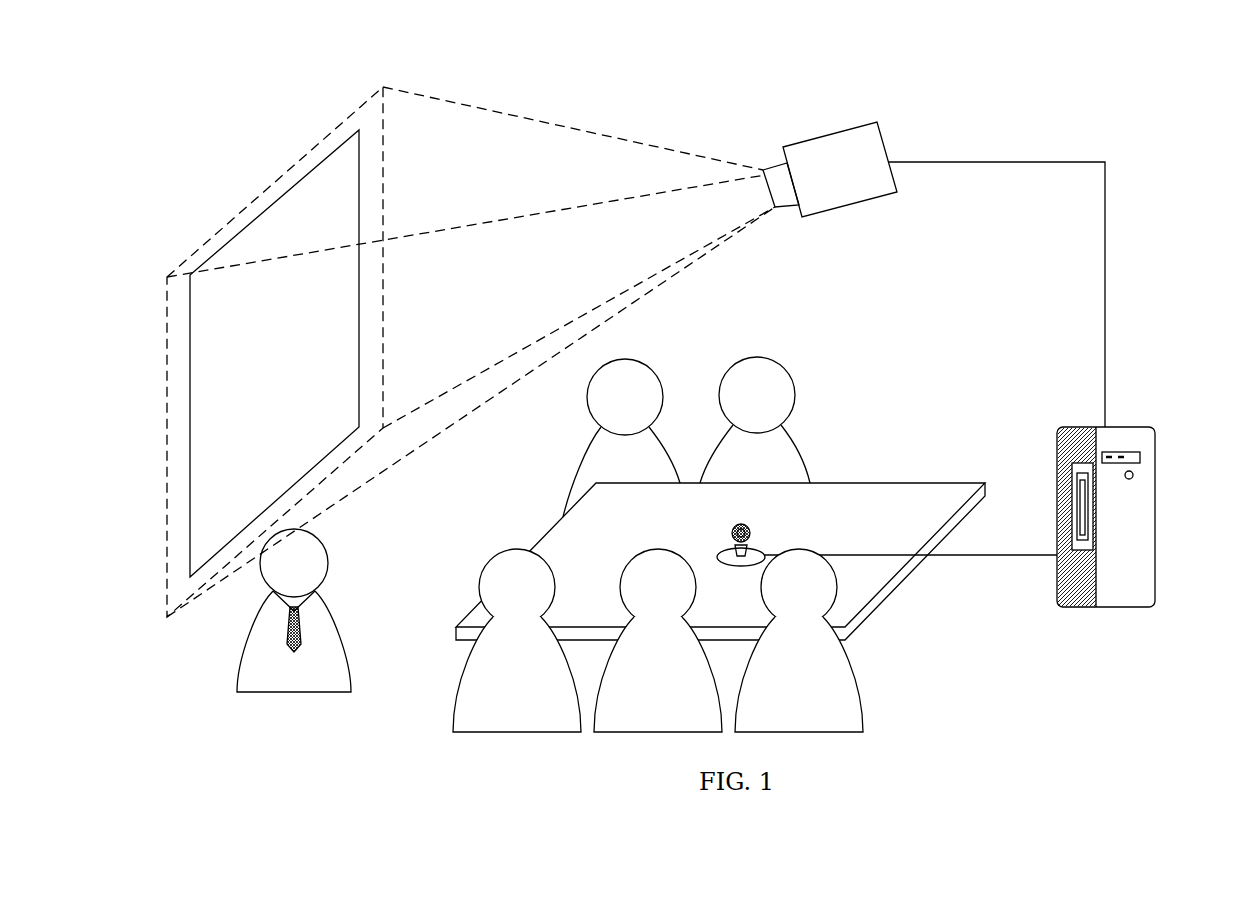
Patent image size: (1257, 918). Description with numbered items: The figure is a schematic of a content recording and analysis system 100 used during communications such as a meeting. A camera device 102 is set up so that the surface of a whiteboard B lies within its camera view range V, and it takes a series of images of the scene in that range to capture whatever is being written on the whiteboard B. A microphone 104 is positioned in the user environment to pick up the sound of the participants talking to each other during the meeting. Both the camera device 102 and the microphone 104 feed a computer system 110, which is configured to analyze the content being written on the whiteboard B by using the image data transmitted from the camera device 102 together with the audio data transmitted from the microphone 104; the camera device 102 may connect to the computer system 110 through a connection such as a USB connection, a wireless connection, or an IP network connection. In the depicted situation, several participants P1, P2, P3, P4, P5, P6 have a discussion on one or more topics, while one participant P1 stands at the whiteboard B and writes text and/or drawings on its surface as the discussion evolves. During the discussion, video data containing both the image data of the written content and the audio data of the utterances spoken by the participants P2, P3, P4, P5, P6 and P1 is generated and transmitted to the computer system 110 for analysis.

The content recording and analysis system 100 is at (1160, 132).
The camera device 102 is at (887, 147).
The microphone 104 is at (753, 529).
The computer system 110 is at (1155, 527).
The camera view range V is at (298, 160).
The whiteboard B is at (359, 188).
The participant P1 is at (345, 645).
The participant P2 is at (802, 457).
The participant P3 is at (665, 449).
The participant P4 is at (575, 689).
The participant P5 is at (717, 689).
The participant P6 is at (860, 689).